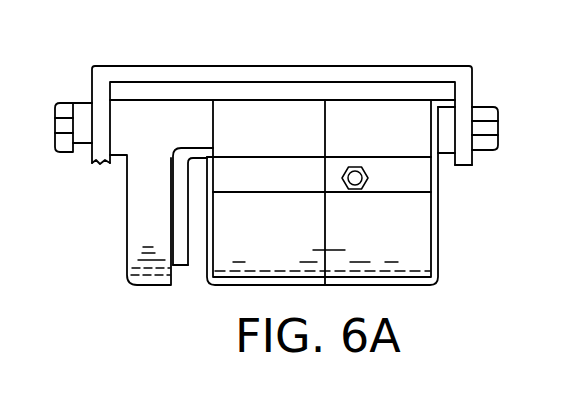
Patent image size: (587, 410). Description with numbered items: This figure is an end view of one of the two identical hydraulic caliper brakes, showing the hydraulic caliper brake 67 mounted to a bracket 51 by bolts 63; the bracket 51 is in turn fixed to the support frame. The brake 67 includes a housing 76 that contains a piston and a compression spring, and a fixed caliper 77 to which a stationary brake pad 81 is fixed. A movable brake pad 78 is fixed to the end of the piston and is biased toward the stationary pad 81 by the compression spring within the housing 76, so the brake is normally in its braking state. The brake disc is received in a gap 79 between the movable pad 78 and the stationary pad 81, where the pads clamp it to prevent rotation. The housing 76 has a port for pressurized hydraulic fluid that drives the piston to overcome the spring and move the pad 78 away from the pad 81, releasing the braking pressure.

The bracket 51 is at (155, 72).
The bolts 63 is at (65, 107).
The hydraulic caliper brake 67 is at (120, 290).
The housing 76 is at (413, 238).
The fixed caliper 77 is at (137, 232).
The movable brake pad 78 is at (210, 187).
The gap 79 is at (198, 267).
The stationary brake pad 81 is at (185, 267).